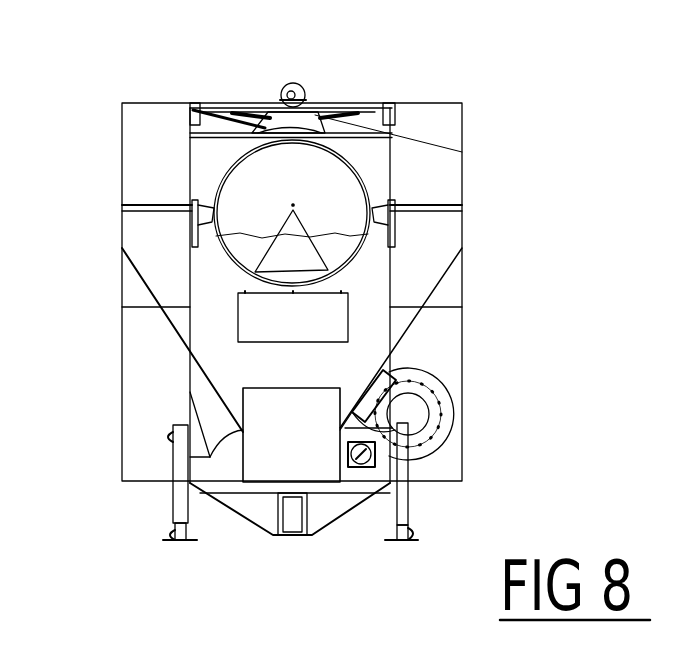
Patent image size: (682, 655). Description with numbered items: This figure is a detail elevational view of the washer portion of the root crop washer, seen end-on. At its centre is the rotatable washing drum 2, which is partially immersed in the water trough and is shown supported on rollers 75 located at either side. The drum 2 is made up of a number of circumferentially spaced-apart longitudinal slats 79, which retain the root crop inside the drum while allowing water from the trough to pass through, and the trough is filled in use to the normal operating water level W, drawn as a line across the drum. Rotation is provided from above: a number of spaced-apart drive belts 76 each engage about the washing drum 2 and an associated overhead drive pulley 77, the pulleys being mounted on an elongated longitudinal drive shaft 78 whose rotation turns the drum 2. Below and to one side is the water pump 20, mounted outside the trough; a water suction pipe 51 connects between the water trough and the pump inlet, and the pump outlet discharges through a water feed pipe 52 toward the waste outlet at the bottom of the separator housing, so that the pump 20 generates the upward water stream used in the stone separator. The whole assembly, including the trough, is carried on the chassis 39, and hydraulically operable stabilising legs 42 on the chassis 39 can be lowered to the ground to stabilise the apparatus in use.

The washing drum 2 is at (360, 172).
The normal operating water level W is at (250, 238).
The rollers 75 is at (212, 207).
The longitudinal slats 79 is at (232, 162).
The overhead drive pulley 77 is at (303, 88).
The longitudinal drive shaft 78 is at (285, 93).
The drive belts 76 is at (198, 110).
The water pump 20 is at (448, 408).
The water suction pipe 51 is at (390, 388).
The water feed pipe 52 is at (361, 467).
The stabilising legs 42 is at (180, 500).
The chassis 39 is at (240, 513).